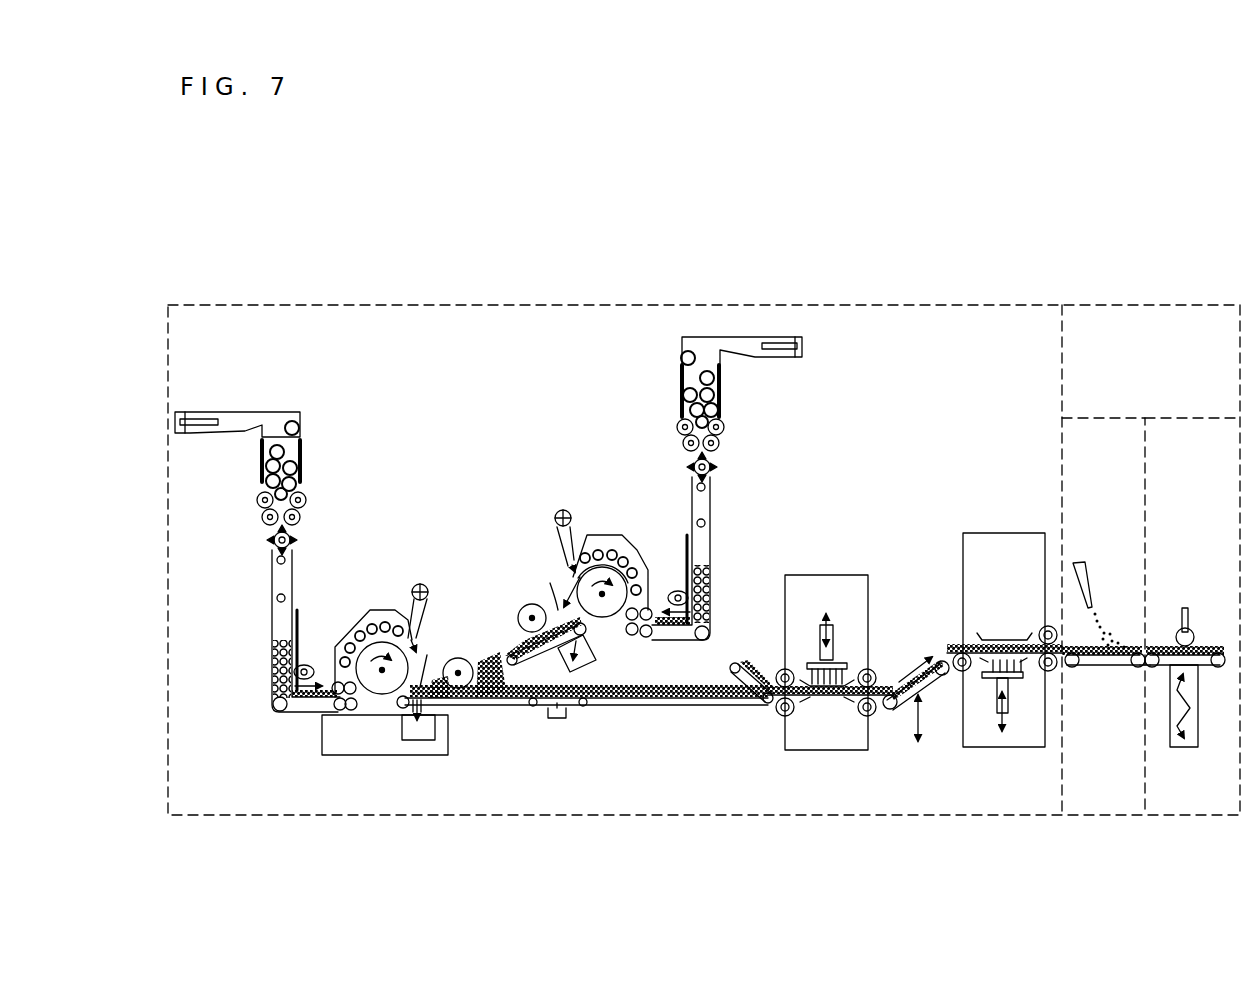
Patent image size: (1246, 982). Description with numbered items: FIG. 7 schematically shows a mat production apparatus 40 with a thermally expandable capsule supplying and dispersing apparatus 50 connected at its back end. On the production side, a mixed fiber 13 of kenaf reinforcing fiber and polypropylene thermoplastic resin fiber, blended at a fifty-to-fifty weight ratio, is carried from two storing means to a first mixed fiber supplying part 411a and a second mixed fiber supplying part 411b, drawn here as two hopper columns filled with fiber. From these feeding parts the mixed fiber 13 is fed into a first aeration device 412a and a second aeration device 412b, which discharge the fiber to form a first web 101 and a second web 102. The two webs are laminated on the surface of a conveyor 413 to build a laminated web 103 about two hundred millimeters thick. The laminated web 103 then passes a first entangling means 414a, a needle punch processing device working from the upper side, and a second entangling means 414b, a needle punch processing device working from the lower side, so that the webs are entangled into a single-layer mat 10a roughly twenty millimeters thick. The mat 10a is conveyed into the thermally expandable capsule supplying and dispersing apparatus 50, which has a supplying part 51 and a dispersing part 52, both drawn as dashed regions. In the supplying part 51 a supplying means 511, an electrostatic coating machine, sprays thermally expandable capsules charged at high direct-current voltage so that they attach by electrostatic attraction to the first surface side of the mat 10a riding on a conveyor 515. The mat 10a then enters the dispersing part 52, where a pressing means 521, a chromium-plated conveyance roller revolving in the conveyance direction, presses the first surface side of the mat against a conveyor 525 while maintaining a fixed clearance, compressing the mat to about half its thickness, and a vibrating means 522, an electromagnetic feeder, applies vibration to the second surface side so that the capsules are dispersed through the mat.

The mat production apparatus 40 is at (401, 300).
The thermally expandable capsule supplying and dispersing apparatus 50 is at (1137, 305).
The supplying part 51 is at (1088, 410).
The dispersing part 52 is at (1210, 402).
The first mixed fiber supplying part 411a is at (277, 418).
The second mixed fiber supplying part 411b is at (712, 337).
The mixed fiber 13 is at (300, 428).
The first aeration device 412a is at (378, 601).
The second aeration device 412b is at (605, 527).
The second web 102 is at (484, 660).
The first web 101 is at (488, 702).
The laminated web 103 is at (615, 704).
The conveying means (conveyor) 413 is at (690, 707).
The first entangling means 414a is at (828, 575).
The second entangling means 414b is at (1002, 533).
The supplying means (electrostatic coating machine) 511 is at (1078, 560).
The mat 10a is at (1080, 667).
The conveyor 515 is at (1132, 668).
The conveyor 525 is at (1163, 667).
The pressing means 521 is at (1200, 627).
The vibrating means 522 is at (1198, 735).